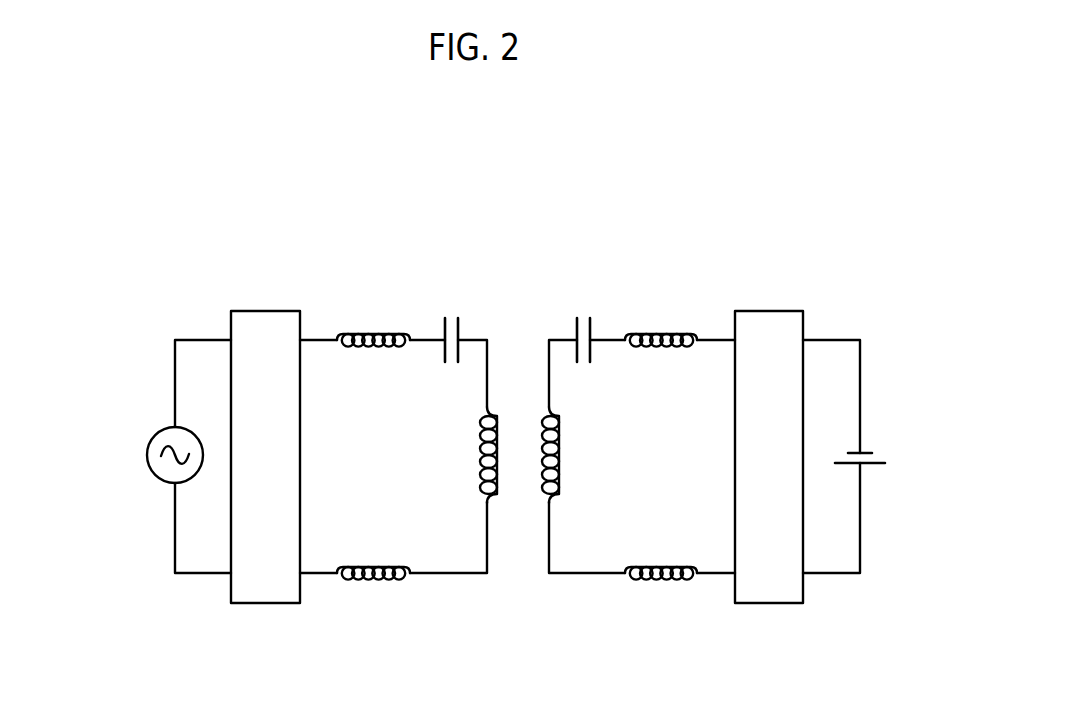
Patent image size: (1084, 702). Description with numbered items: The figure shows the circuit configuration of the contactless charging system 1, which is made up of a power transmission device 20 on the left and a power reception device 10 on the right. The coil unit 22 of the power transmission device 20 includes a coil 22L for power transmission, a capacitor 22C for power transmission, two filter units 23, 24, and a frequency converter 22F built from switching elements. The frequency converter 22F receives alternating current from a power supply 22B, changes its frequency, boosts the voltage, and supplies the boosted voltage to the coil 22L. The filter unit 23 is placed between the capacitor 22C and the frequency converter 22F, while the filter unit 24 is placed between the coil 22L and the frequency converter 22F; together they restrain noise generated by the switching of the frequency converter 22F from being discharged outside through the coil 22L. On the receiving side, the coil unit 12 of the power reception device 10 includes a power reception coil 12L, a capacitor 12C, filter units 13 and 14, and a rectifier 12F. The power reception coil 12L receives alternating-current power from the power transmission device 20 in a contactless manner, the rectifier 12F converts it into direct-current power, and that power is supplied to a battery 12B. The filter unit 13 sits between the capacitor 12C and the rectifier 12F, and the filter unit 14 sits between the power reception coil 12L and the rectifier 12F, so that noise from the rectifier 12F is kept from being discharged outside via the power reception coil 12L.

The contactless charging system 1 is at (219, 198).
The power reception device 10 is at (712, 385).
The coil unit 12 is at (783, 211).
The battery 12B is at (865, 452).
The capacitor 12C is at (591, 320).
The rectifier 12F is at (764, 311).
The power reception coil 12L is at (542, 430).
The filter unit 13 is at (658, 333).
The filter unit 14 is at (660, 567).
The power transmission device 20 is at (324, 385).
The coil unit 22 is at (503, 211).
The power supply 22B is at (157, 428).
The capacitor for power transmission 22C is at (445, 320).
The frequency converter 22F is at (270, 311).
The coil for power transmission 22L is at (498, 430).
The filter unit 23 is at (372, 333).
The filter unit 24 is at (373, 567).